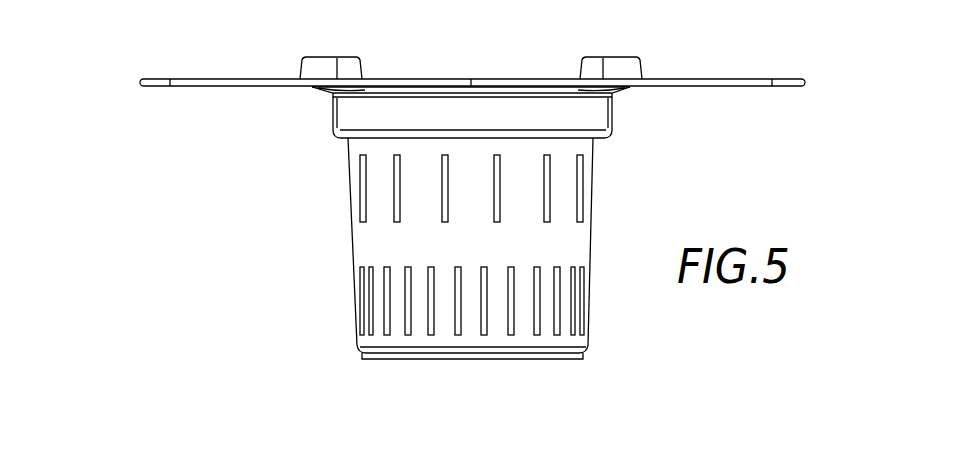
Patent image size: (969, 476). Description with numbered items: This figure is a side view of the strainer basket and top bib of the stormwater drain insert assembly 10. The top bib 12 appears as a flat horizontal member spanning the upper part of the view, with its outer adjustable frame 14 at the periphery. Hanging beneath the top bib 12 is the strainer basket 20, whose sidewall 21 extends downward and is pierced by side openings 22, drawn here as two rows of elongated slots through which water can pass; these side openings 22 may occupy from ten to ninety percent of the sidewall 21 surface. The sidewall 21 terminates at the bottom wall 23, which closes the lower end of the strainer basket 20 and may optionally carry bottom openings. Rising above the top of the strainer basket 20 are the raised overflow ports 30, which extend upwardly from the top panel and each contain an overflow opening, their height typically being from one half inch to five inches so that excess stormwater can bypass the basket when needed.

The stormwater drain insert assembly 10 is at (110, 73).
The top bib 12 is at (740, 78).
The outer adjustable frame 14 is at (806, 84).
The strainer basket 20 is at (603, 66).
The sidewall 21 is at (370, 248).
The side openings 22 is at (443, 198).
The bottom wall 23 is at (498, 360).
The raised overflow ports 30 is at (347, 67).